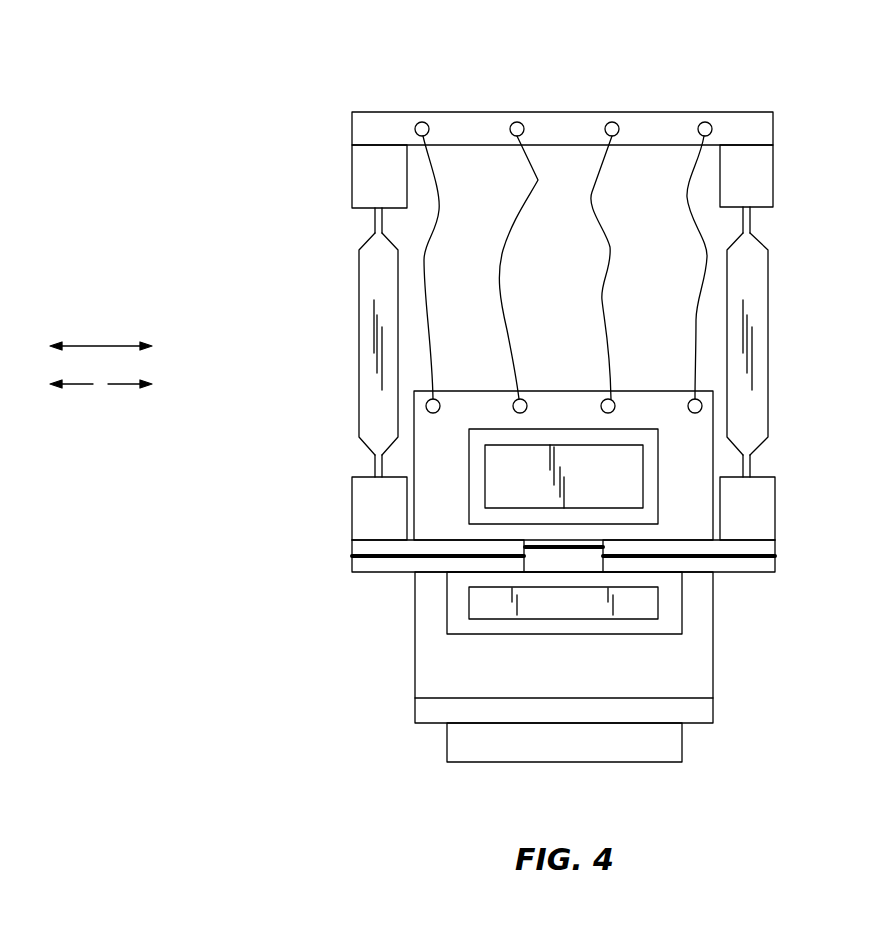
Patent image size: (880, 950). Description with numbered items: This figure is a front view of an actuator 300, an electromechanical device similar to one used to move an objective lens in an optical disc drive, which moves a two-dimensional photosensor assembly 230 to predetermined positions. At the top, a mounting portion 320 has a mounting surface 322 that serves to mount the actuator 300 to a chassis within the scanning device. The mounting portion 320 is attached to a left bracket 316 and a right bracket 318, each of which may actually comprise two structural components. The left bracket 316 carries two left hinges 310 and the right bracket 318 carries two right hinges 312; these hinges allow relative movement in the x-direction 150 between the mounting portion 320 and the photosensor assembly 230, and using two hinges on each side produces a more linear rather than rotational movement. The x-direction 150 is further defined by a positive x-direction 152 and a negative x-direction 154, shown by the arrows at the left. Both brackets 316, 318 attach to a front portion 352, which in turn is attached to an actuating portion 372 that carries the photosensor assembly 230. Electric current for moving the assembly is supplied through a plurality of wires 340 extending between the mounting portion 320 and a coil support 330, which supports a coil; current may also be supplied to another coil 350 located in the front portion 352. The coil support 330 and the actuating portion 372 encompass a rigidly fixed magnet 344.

The actuator 300 is at (216, 110).
The mounting portion 320 is at (656, 102).
The mounting surface 322 is at (455, 112).
The wires 340 is at (587, 190).
The coil support 330 is at (562, 380).
The left hinges 310 is at (375, 222).
The right hinges 312 is at (750, 222).
The left bracket 316 is at (349, 340).
The right bracket 318 is at (778, 340).
The magnet 344 is at (469, 603).
The coil 350 is at (775, 553).
The front portion 352 is at (770, 580).
The actuating portion 372 is at (723, 654).
The two-dimensional photosensor assembly 230 is at (693, 742).
The x-direction 150 is at (100, 340).
The positive x-direction 152 is at (108, 384).
The negative x-direction 154 is at (93, 384).